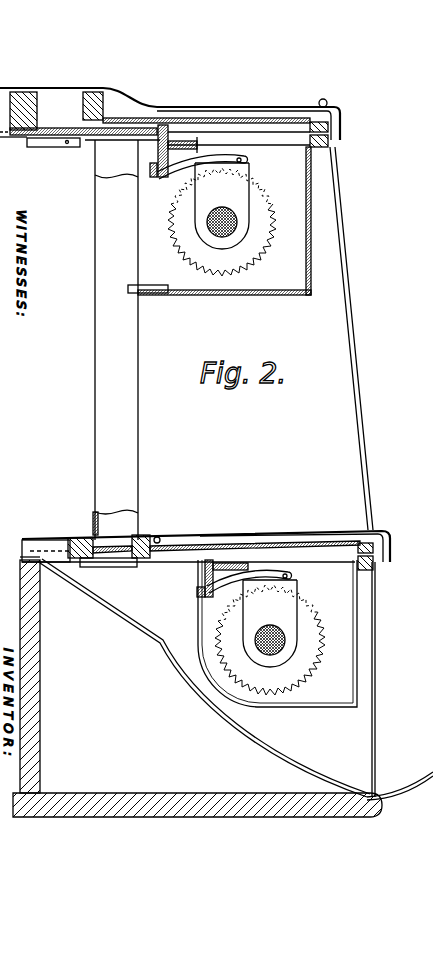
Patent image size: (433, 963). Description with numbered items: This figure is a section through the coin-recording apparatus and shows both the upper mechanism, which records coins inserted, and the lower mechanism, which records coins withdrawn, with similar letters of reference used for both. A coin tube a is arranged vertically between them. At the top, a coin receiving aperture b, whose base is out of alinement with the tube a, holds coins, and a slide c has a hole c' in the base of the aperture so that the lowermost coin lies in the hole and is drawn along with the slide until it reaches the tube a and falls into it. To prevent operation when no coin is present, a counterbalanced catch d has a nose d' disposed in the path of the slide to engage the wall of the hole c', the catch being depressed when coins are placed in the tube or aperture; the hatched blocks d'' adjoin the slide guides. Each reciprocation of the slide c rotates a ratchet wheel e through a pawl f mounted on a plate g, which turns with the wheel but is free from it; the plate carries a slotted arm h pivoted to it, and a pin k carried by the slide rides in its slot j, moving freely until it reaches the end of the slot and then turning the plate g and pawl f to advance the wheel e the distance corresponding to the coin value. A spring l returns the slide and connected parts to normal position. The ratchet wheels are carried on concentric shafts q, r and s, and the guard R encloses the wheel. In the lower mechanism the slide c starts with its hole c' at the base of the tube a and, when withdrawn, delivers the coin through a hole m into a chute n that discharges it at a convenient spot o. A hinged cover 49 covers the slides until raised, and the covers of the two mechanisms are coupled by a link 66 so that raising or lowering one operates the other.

The hinged cover 49 is at (103, 88).
The link 66 is at (358, 417).
The coin tube a is at (115, 340).
The coin receiving aperture b is at (56, 111).
The slide c is at (182, 336).
The hole c' is at (51, 346).
The counterbalanced catch d is at (82, 369).
The nose d' is at (83, 123).
The clamping blocks (lower) d'' is at (109, 536).
The ratchet wheel e is at (317, 630).
The pawl f is at (195, 175).
The plate g is at (247, 202).
The slotted arm h is at (226, 155).
The slot j is at (157, 157).
The pin k is at (160, 178).
The spring l is at (173, 140).
The hole m is at (160, 540).
The chute n is at (213, 720).
The delivery spot o is at (400, 793).
The shaft q is at (222, 237).
The shaft r is at (230, 228).
The shaft s is at (215, 228).
The saw guard R is at (227, 212).